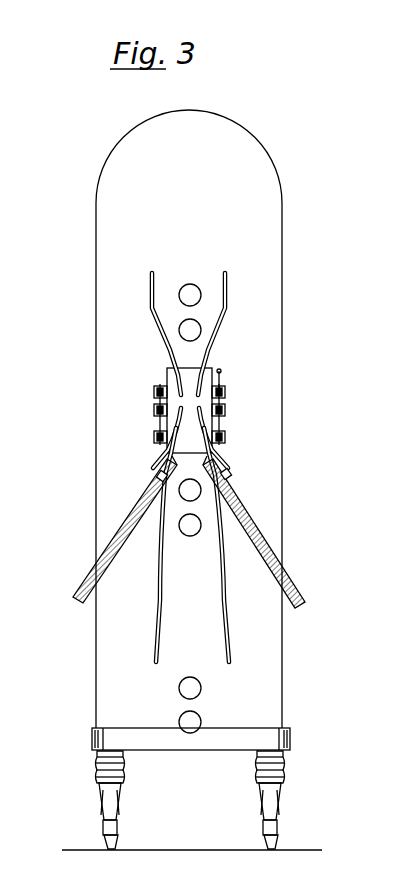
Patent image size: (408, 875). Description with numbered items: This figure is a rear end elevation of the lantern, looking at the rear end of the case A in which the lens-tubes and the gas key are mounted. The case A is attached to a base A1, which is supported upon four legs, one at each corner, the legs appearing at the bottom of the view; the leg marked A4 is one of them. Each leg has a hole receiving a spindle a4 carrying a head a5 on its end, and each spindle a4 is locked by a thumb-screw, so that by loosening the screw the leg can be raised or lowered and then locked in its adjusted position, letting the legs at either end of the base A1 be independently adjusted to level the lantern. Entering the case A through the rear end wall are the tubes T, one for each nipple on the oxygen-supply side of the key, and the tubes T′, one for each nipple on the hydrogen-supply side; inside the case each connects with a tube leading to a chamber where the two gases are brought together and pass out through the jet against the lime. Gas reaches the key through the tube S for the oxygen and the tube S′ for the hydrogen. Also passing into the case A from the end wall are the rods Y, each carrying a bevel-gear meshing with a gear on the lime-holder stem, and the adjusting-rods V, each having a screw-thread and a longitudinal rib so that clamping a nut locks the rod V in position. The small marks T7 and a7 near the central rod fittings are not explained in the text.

The case A is at (179, 419).
The base A1 is at (191, 751).
The base leg A4 is at (228, 818).
The spindle a4 is at (104, 837).
The head a5 is at (290, 842).
The rod Y is at (190, 284).
The adjusting-rod V is at (196, 521).
The tube T is at (222, 328).
The tube T′ is at (152, 326).
The clamp screw T7 is at (157, 390).
The stud a7 is at (244, 370).
The tube for the oxygen gas S is at (160, 478).
The tube for the hydrogen gas S′ is at (169, 510).